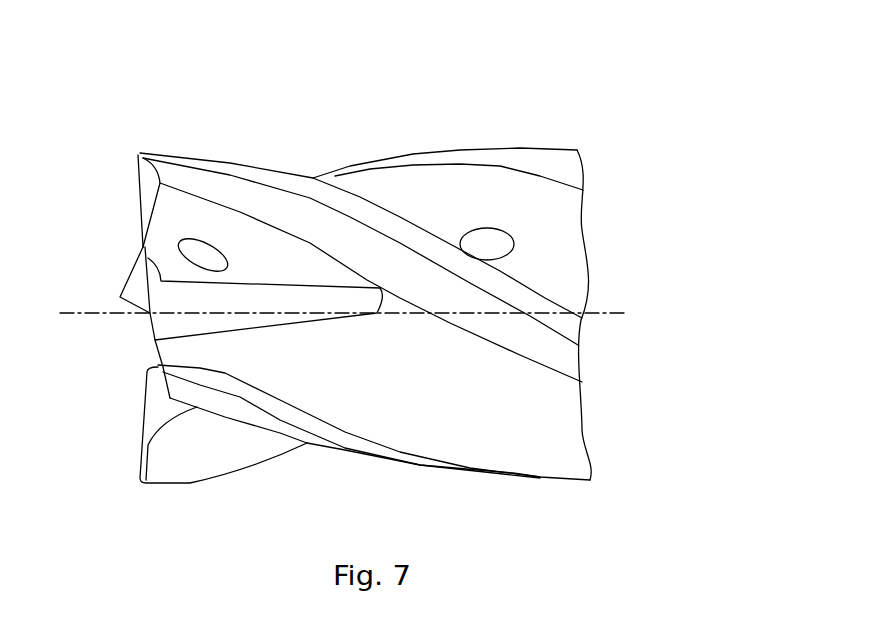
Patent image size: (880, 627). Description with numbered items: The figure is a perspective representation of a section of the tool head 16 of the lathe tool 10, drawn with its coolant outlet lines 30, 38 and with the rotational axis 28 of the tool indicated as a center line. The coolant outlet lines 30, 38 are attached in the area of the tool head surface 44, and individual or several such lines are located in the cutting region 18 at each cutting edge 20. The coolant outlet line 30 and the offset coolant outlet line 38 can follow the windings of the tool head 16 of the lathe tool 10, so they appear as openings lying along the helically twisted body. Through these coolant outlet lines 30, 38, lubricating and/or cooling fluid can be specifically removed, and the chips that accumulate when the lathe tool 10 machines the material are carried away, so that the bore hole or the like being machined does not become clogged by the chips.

The lathe tool 10 is at (660, 143).
The tool head 16 is at (352, 120).
The cutting region 18 is at (193, 453).
The cutting edge 20 is at (140, 180).
The rotational axis 28 is at (616, 313).
The coolant outlet line 30 is at (205, 258).
The offset coolant outlet line 38 is at (486, 240).
The tool head surface 44 is at (140, 279).